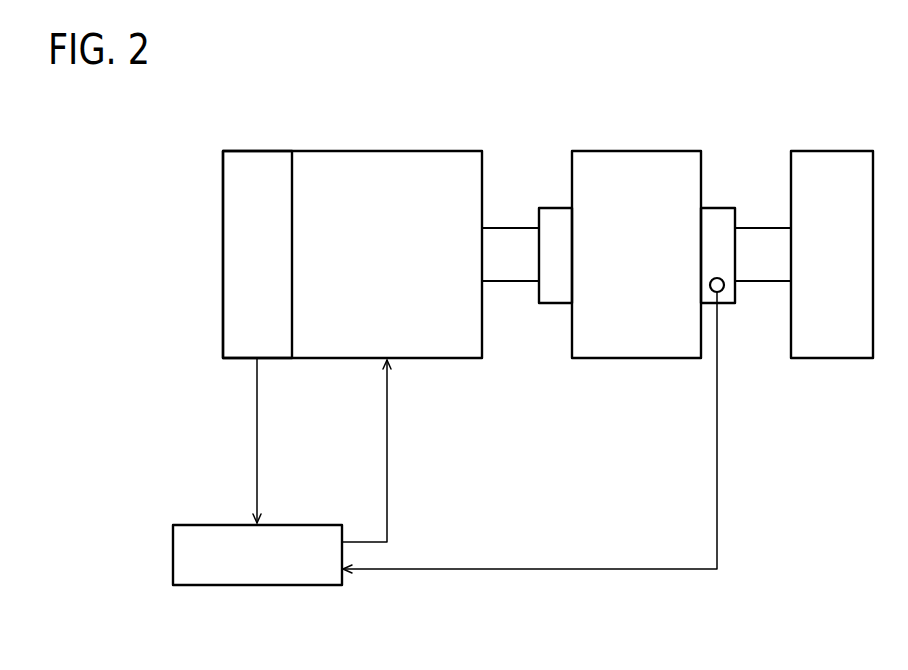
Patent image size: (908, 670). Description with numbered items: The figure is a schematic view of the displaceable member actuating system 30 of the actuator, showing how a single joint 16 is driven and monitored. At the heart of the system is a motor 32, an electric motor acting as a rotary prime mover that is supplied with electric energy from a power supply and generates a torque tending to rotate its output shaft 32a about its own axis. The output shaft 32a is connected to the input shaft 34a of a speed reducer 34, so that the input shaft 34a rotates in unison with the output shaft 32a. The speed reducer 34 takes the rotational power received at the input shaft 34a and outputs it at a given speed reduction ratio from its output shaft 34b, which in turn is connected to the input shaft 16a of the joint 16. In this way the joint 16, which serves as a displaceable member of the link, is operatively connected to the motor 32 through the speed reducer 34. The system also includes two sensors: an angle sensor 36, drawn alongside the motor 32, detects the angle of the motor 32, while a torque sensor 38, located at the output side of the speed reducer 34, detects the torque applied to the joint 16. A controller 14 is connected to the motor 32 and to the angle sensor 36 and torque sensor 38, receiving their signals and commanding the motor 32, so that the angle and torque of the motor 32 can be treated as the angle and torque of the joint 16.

The displaceable member actuating system 30 is at (505, 84).
The motor 32 is at (367, 157).
The angle sensor 36 is at (253, 157).
The output shaft 32a is at (507, 243).
The speed reducer 34 is at (638, 160).
The input shaft 34a is at (549, 292).
The output shaft 34b is at (726, 217).
The torque sensor 38 is at (713, 278).
The joint 16 is at (843, 158).
The input shaft 16a is at (770, 272).
The controller 14 is at (237, 586).